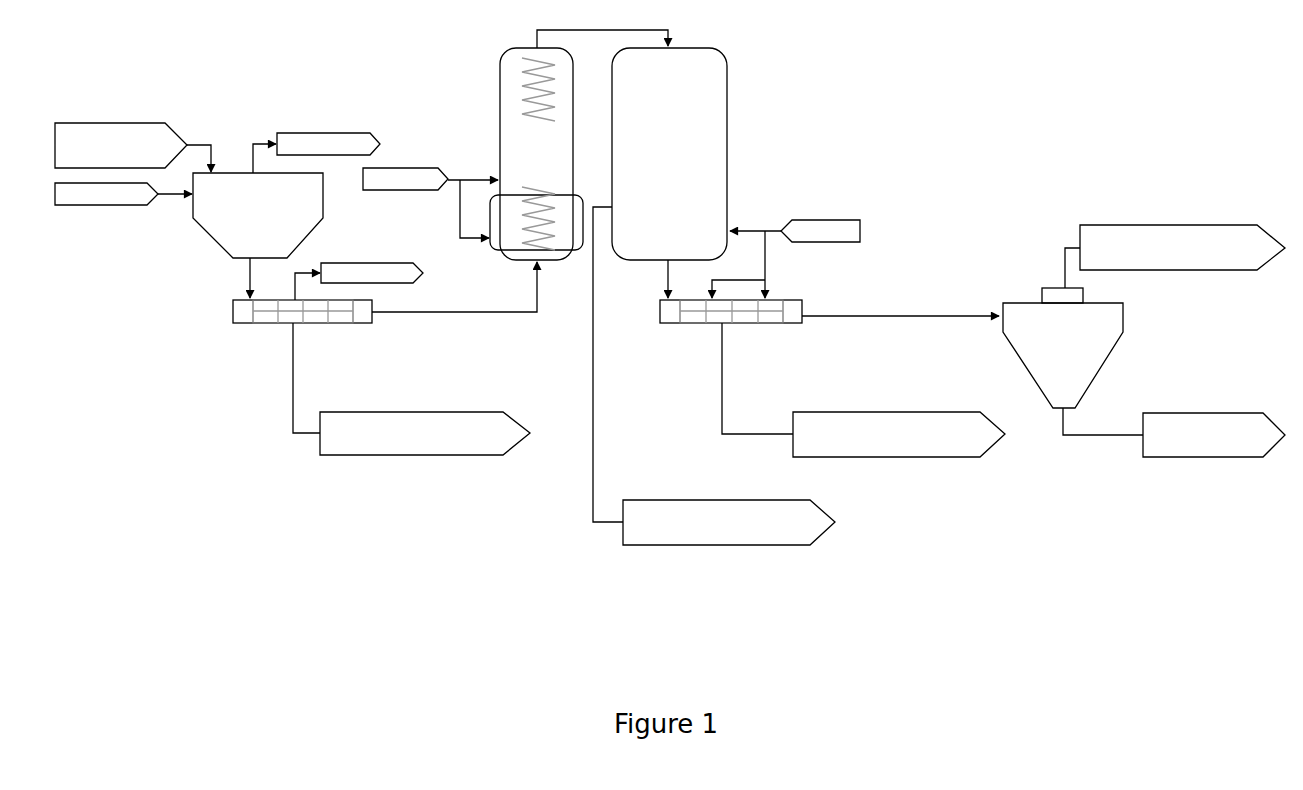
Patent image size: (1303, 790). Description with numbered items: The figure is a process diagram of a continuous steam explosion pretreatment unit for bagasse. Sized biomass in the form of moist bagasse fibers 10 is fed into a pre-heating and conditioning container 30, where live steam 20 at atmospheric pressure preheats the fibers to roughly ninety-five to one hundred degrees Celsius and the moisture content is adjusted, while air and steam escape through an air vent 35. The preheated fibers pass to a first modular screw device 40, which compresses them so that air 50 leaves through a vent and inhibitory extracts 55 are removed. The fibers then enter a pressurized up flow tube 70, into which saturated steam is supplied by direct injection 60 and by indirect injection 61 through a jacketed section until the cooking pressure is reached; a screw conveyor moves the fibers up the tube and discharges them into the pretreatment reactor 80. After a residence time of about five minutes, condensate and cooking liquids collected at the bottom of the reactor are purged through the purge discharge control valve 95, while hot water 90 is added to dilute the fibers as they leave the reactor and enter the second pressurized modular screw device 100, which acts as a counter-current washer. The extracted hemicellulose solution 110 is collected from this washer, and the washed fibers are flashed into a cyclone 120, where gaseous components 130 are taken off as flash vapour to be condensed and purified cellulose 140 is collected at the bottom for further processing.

The bagasse fibers 10 is at (127, 122).
The live steam 20 is at (108, 208).
The pre-heating and conditioning container 30 is at (327, 228).
The air vent 35 is at (340, 135).
The first modular screw device 40 is at (233, 319).
The air 50 is at (388, 263).
The inhibitory extracts 55 is at (363, 456).
The direct injection of steam 60 is at (477, 175).
The indirect injection of steam 61 is at (466, 251).
The up flow tube 70 is at (500, 90).
The pretreatment reactor 80 is at (727, 112).
The hot water 90 is at (797, 218).
The purge discharge control valve 95 is at (668, 547).
The second pressurized modular screw device 100 is at (648, 327).
The extracted hemicellulose solution 110 is at (858, 460).
The cyclone 120 is at (1123, 331).
The condensed gaseous components 130 is at (1180, 225).
The pure cellulose outlet 140 is at (1200, 460).